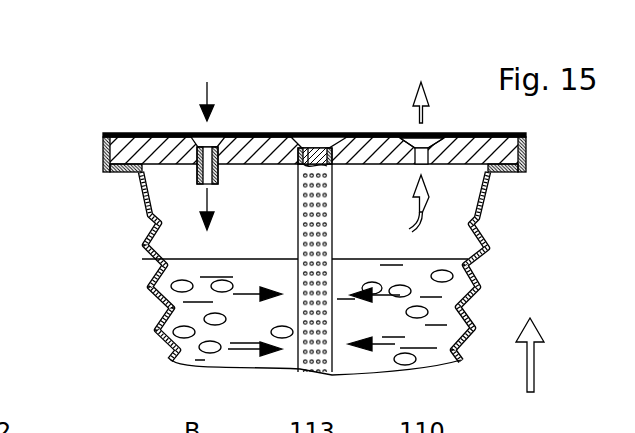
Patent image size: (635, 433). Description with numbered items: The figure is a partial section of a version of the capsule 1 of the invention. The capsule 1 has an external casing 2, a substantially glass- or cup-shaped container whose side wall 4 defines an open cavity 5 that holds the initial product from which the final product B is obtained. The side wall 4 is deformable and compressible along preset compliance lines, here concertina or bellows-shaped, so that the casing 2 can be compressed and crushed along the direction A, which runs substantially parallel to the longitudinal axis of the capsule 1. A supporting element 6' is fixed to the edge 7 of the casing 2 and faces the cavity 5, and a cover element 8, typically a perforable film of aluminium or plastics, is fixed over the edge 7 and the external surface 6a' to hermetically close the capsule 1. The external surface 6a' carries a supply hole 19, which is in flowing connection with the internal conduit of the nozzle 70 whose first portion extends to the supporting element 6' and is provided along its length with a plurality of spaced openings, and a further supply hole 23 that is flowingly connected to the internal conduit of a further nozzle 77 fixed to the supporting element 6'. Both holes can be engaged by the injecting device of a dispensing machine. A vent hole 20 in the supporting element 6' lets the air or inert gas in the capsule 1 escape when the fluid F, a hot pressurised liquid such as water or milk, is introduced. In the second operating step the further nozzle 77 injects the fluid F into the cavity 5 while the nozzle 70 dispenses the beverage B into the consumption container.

The capsule 1 is at (104, 85).
The cover element 8 is at (133, 134).
The edge 7 is at (103, 146).
The supporting element 6' is at (540, 154).
The external surface 6a' is at (405, 137).
The further supply hole 23 is at (218, 137).
The supply hole 19 is at (328, 137).
The vent hole 20 is at (432, 140).
The cavity 5 is at (385, 226).
The further nozzle 77 is at (197, 173).
The external casing 2 is at (522, 257).
The side wall 4 is at (483, 292).
The nozzle 70 is at (298, 238).
The fluid F is at (203, 221).
The final product B is at (270, 302).
The compression direction A is at (527, 373).